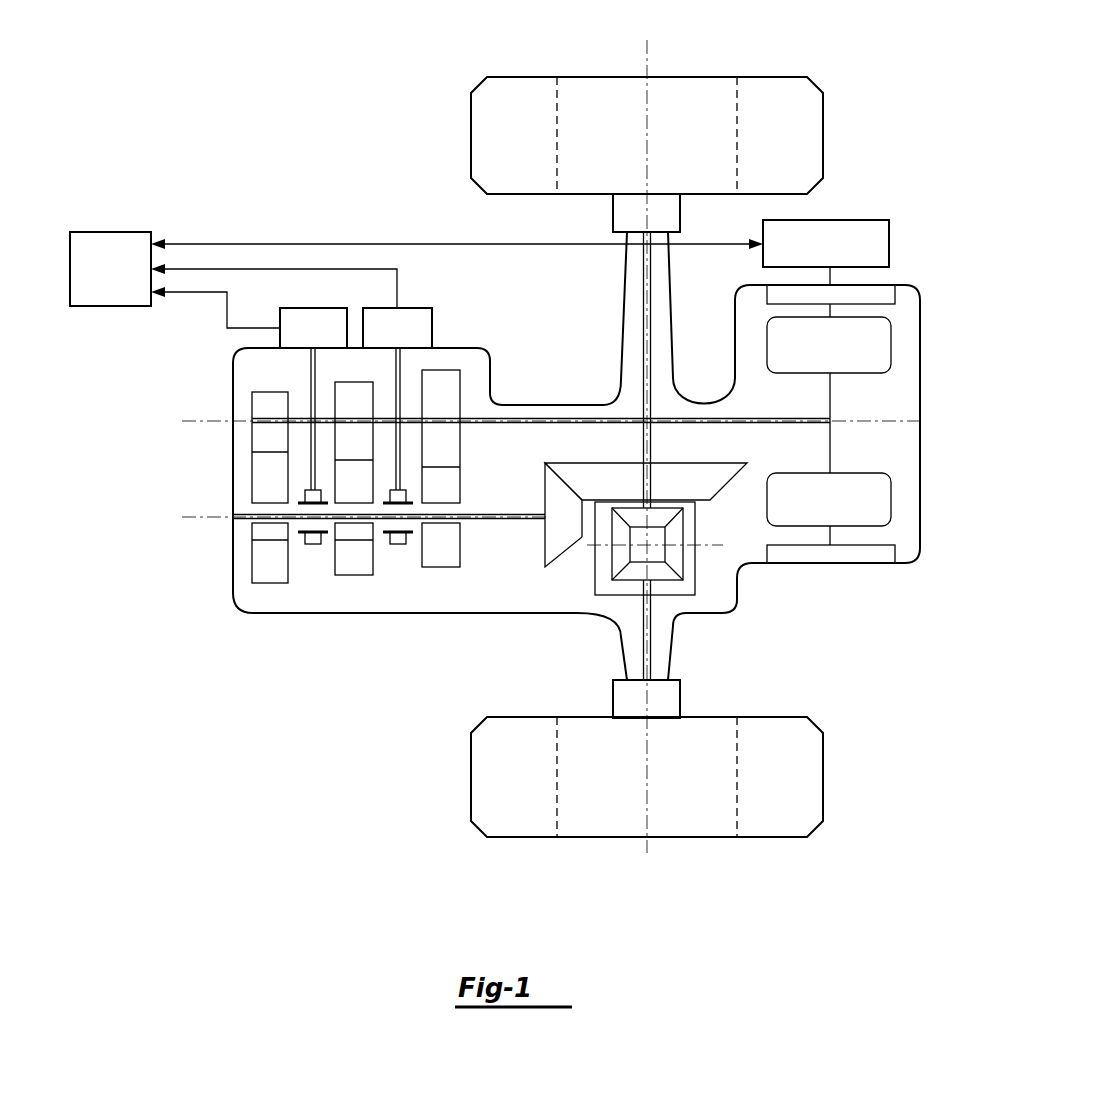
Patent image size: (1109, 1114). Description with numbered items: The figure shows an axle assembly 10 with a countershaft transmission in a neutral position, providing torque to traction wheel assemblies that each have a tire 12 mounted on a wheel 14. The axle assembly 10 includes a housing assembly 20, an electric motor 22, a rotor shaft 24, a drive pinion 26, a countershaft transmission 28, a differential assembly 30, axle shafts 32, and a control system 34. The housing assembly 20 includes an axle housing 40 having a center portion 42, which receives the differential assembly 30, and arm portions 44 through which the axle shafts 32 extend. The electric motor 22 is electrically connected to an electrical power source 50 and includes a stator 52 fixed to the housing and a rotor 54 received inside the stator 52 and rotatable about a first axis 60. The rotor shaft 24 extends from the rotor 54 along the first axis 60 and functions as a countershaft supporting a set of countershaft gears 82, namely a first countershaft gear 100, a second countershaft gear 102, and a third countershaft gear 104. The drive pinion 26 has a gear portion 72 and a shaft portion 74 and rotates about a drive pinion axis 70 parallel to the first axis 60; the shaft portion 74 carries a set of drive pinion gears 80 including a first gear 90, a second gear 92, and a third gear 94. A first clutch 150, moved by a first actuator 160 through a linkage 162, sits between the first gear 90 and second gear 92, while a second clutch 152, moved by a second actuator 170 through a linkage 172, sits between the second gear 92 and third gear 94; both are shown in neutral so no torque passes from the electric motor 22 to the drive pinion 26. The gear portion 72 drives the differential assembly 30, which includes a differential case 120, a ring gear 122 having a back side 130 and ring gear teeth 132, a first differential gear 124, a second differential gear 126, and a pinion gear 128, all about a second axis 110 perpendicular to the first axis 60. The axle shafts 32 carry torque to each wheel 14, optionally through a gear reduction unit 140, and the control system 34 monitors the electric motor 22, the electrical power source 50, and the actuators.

The axle assembly 10 is at (958, 320).
The tire 12 is at (823, 140).
The wheel 14 is at (703, 77).
The housing assembly 20 is at (920, 395).
The electric motor 22 is at (822, 578).
The rotor shaft 24 is at (793, 420).
The drive pinion 26 is at (533, 489).
The countershaft transmission 28 is at (348, 600).
The differential assembly 30 is at (622, 606).
The axle shaft 32 is at (652, 298).
The control system 34 is at (121, 280).
The axle housing 40 is at (572, 405).
The center portion 42 is at (703, 405).
The arm portion 44 is at (623, 280).
The electrical power source 50 is at (840, 256).
The stator 52 is at (884, 296).
The rotor 54 is at (840, 359).
The first axis 60 is at (192, 420).
The drive pinion axis 70 is at (192, 517).
The gear portion 72 is at (557, 555).
The shaft portion 74 is at (476, 513).
The set of drive pinion gears 80 is at (236, 497).
The set of countershaft gears 82 is at (236, 405).
The first gear 90 is at (452, 562).
The second gear 92 is at (365, 569).
The third gear 94 is at (281, 576).
The first countershaft gear 100 is at (430, 399).
The second countershaft gear 102 is at (343, 411).
The third countershaft gear 104 is at (259, 416).
The second axis 110 is at (647, 845).
The differential case 120 is at (697, 567).
The ring gear 122 is at (676, 495).
The first differential gear 124 is at (632, 508).
The second differential gear 126 is at (670, 590).
The pinion gear 128 is at (683, 537).
The back side 130 is at (660, 463).
The set of ring gear teeth 132 is at (730, 486).
The gear reduction unit 140 is at (636, 226).
The first clutch 150 is at (396, 545).
The second clutch 152 is at (312, 545).
The first actuator 160 is at (386, 340).
The linkage 162 is at (400, 368).
The second actuator 170 is at (302, 340).
The linkage 172 is at (316, 368).